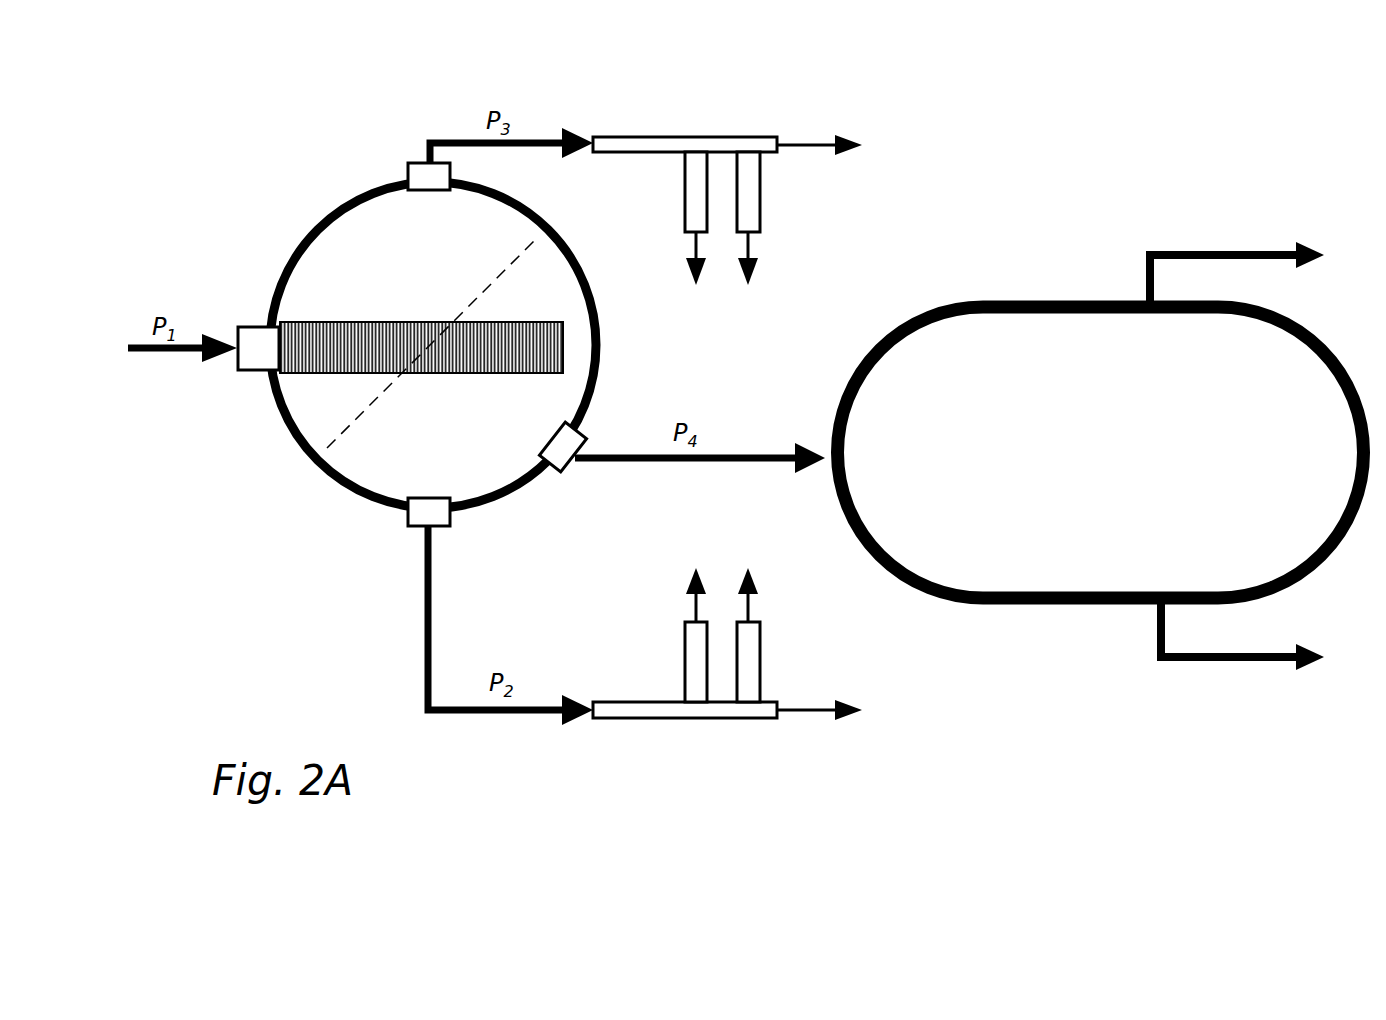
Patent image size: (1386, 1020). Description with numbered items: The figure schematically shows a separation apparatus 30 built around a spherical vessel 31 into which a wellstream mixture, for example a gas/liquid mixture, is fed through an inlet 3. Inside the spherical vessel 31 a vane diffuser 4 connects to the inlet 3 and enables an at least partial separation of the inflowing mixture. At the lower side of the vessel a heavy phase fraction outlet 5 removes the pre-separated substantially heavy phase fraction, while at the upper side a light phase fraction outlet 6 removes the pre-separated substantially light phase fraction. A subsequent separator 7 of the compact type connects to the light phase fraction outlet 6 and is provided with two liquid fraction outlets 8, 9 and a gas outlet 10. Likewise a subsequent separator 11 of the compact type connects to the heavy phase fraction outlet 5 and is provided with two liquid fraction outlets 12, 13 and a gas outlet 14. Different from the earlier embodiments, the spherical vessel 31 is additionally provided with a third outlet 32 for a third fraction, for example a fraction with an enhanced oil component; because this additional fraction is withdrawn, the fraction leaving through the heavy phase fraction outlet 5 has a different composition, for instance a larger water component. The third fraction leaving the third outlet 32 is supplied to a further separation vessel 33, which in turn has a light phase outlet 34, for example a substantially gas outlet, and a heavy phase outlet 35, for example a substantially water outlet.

The inlet 3 is at (253, 325).
The vane diffuser 4 is at (425, 322).
The heavy phase fraction outlet 5 is at (405, 520).
The light phase fraction outlet 6 is at (408, 170).
The subsequent separator 7 is at (695, 123).
The liquid fraction outlet 8 is at (692, 247).
The liquid fraction outlet 9 is at (750, 247).
The gas outlet 10 is at (814, 143).
The subsequent separator 11 is at (695, 730).
The liquid fraction outlet 12 is at (692, 608).
The liquid fraction outlet 13 is at (749, 610).
The gas outlet 14 is at (810, 718).
The separation apparatus 30 is at (390, 323).
The spherical vessel 31 is at (291, 435).
The third outlet 32 is at (561, 475).
The further separation vessel 33 is at (1013, 299).
The light phase outlet 34 is at (1227, 251).
The heavy phase outlet 35 is at (1232, 667).